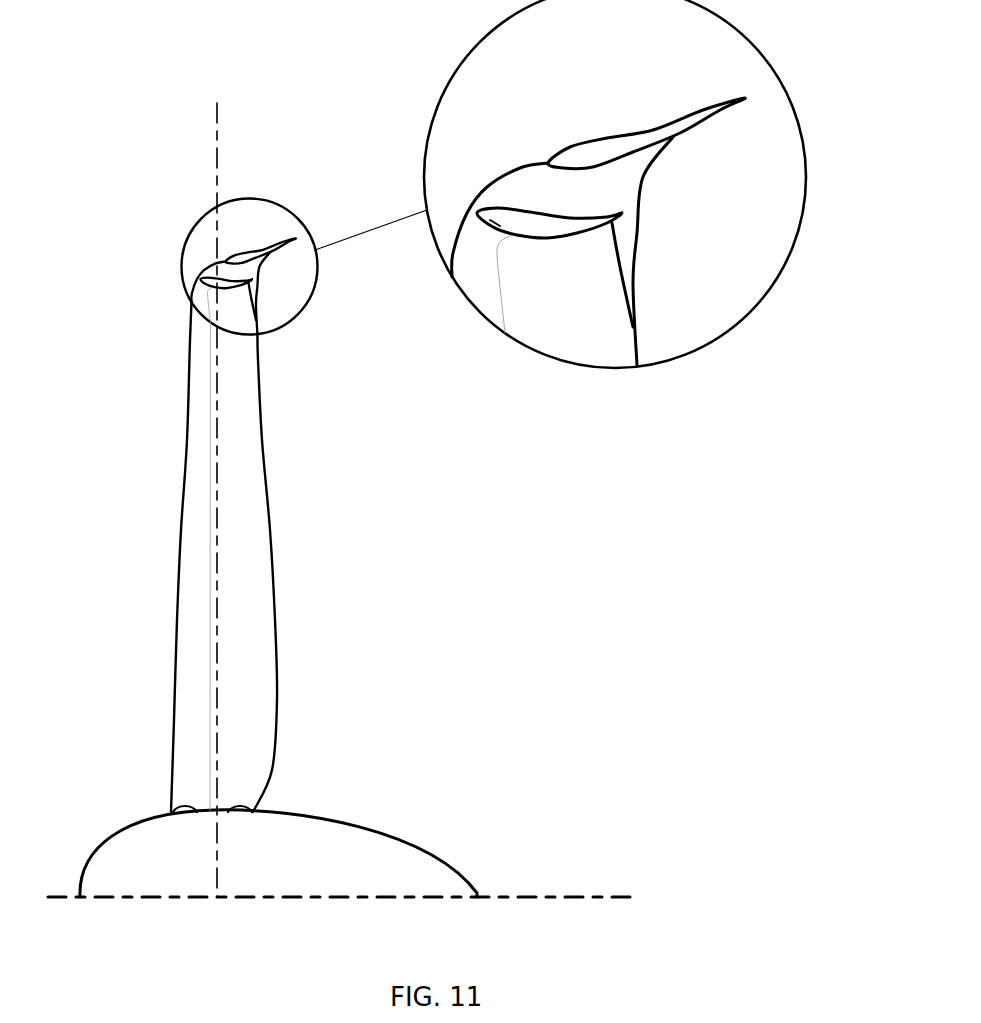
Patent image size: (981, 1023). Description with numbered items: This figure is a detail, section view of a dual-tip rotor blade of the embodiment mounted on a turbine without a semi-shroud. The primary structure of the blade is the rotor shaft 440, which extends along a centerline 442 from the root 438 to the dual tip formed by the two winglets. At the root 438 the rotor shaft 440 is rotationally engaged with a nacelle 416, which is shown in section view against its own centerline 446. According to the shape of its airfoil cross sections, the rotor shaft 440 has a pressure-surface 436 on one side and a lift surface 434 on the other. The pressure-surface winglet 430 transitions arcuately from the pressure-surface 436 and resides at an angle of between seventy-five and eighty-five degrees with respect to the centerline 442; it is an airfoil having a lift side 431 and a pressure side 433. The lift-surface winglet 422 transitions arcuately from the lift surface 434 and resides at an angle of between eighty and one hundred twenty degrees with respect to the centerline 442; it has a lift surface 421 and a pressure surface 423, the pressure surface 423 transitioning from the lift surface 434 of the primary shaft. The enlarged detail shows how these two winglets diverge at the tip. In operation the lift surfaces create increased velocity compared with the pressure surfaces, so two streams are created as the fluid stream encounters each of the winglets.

The nacelle 416 is at (358, 863).
The lift surface 421 is at (517, 205).
The lift-surface winglet 422 is at (503, 223).
The pressure surface 423 is at (497, 238).
The pressure-surface winglet 430 is at (583, 157).
The lift side 431 is at (603, 132).
The pressure side 433 is at (585, 178).
The lift surface 434 is at (275, 498).
The pressure-surface 436 is at (176, 491).
The root 438 is at (171, 800).
The rotor shaft 440 is at (198, 589).
The centerline 442 is at (217, 138).
The centerline 446 is at (550, 897).